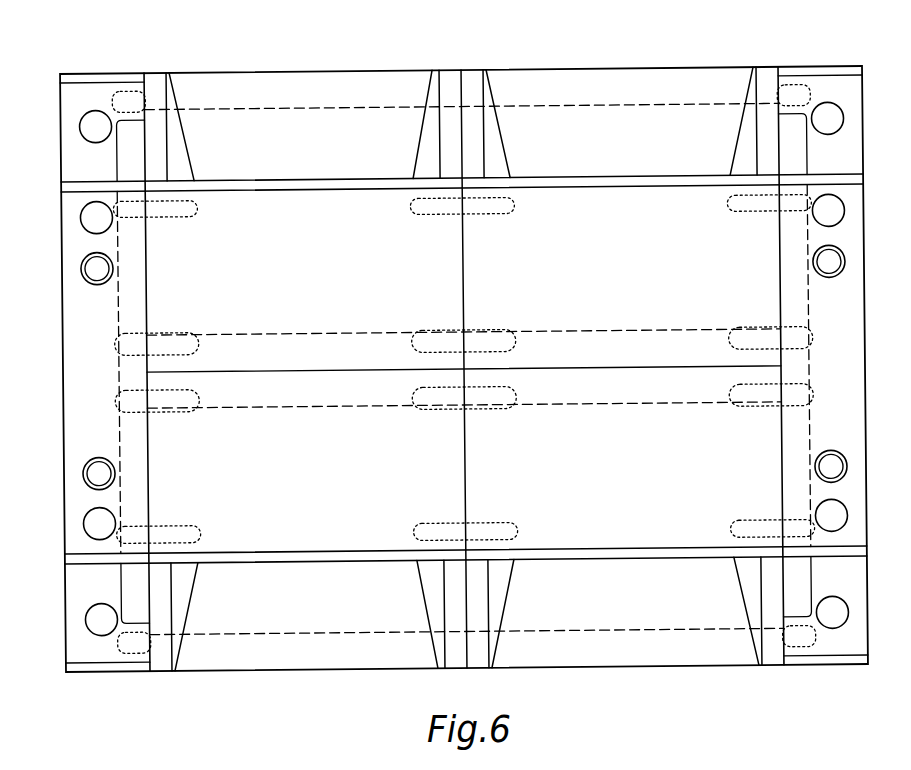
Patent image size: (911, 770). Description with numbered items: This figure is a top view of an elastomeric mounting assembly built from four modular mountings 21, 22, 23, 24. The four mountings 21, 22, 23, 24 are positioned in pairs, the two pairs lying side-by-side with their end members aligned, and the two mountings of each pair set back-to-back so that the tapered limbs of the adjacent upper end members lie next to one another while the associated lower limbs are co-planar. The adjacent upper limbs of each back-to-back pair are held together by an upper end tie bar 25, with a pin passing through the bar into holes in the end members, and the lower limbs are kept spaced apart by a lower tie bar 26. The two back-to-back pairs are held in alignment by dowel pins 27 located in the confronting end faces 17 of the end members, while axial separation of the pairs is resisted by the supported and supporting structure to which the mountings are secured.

The end face 17 is at (458, 284).
The modular mounting 21 is at (617, 607).
The modular mounting 22 is at (624, 132).
The modular mounting 23 is at (310, 604).
The modular mounting 24 is at (312, 131).
The upper end tie bar 25 is at (78, 308).
The lower tie bar 26 is at (77, 154).
The dowel pin 27 is at (497, 205).